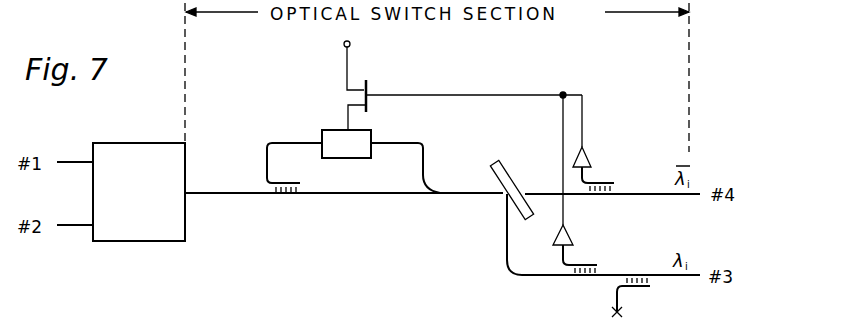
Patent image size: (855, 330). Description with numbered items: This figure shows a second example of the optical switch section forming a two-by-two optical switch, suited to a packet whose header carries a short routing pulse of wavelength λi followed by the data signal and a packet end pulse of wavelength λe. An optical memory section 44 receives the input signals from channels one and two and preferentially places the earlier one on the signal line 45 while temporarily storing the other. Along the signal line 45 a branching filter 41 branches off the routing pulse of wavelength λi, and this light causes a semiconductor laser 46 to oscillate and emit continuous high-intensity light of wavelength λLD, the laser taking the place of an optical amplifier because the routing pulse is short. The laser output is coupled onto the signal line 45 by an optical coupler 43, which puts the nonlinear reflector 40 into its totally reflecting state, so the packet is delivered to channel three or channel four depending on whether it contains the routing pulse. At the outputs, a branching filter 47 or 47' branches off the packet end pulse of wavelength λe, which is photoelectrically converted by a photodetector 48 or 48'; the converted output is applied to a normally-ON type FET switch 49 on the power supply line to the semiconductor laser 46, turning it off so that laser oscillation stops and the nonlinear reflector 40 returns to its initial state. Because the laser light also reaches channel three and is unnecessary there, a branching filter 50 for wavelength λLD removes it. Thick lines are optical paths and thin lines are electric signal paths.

The nonlinear reflector 40 is at (499, 163).
The branching filter 41 is at (286, 197).
The optical coupler 43 is at (439, 197).
The optical memory section 44 is at (141, 143).
The signal line 45 is at (223, 197).
The semiconductor laser 46 is at (329, 130).
The branching filter 47 is at (603, 260).
The branching filter 47' is at (612, 215).
The photodetector 48 is at (556, 184).
The photodetector 48' is at (604, 143).
The normally-ON type FET switch 49 is at (371, 85).
The branching filter 50 is at (644, 272).